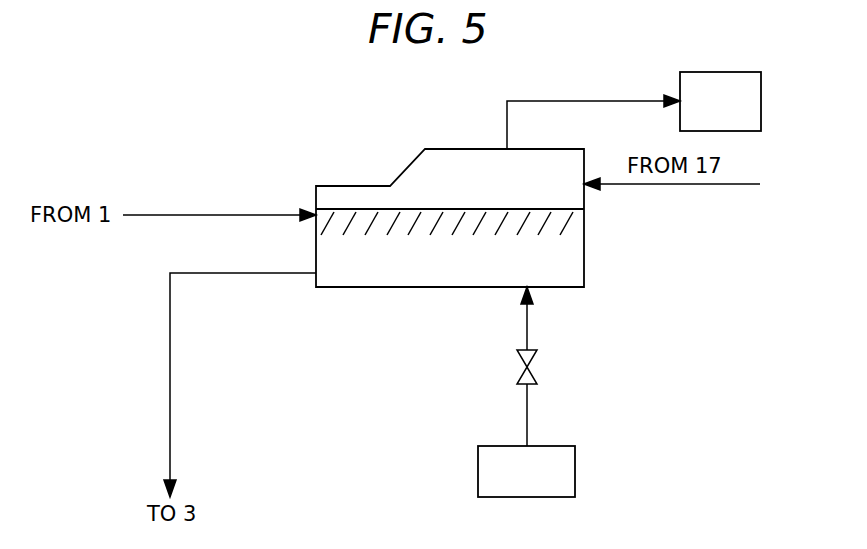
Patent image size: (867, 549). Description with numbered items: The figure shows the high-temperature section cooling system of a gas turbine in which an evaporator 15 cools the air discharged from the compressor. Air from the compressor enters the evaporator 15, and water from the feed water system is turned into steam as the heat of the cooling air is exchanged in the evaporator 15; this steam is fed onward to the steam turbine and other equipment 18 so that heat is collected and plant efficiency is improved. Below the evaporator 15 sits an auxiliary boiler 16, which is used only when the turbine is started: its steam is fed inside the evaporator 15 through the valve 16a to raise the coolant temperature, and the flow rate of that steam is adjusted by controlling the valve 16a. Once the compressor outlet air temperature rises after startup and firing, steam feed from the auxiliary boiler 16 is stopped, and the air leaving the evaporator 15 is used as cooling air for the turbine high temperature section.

The evaporator 15 is at (391, 287).
The auxiliary boiler 16 is at (526, 471).
The valve 16a is at (537, 366).
The steam turbine and other equipment 18 is at (720, 101).